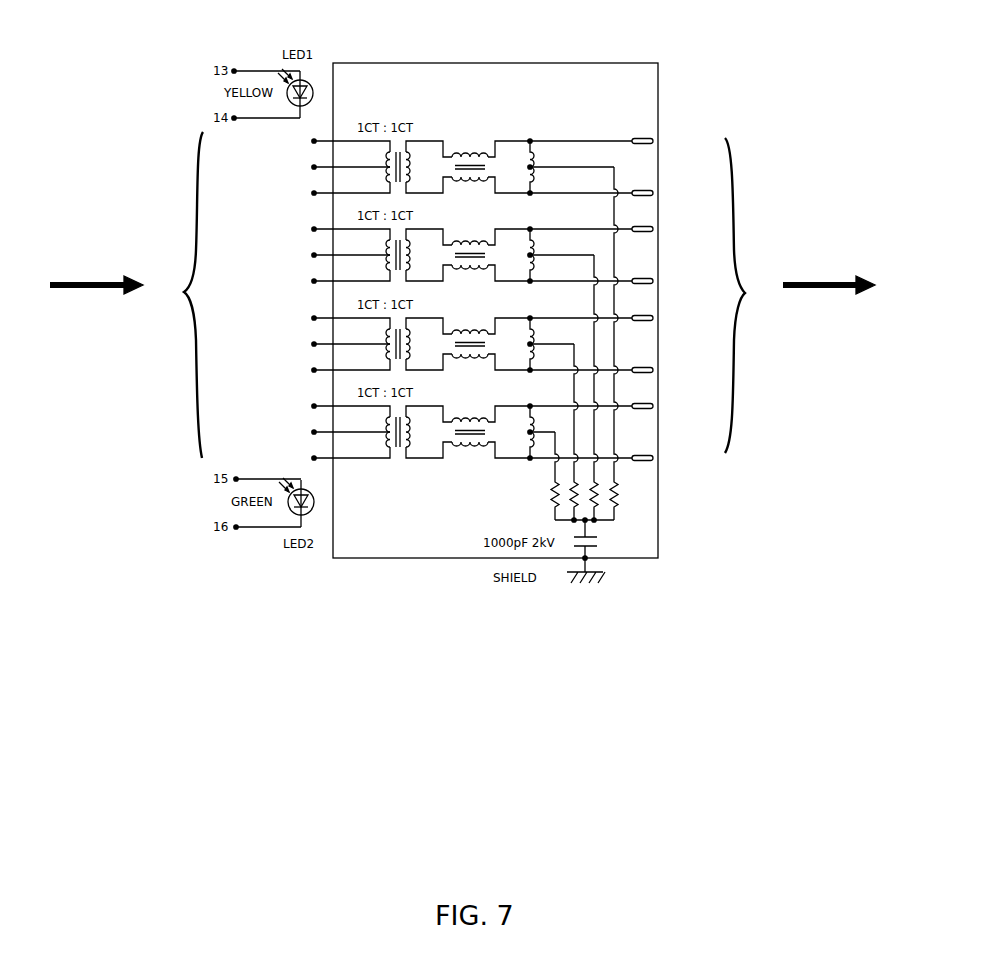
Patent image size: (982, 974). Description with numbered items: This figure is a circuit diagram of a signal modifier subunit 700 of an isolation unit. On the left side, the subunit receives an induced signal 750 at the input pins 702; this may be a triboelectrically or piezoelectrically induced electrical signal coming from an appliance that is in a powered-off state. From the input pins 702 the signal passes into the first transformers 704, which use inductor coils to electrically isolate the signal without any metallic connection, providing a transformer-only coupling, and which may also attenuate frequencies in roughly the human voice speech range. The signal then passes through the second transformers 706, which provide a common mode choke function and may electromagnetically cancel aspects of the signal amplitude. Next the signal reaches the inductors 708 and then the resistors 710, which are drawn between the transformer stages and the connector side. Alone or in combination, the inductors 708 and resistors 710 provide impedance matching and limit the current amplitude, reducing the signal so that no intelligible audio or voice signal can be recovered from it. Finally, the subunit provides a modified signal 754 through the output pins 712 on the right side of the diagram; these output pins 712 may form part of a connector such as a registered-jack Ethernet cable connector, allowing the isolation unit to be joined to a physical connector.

The signal modifier subunit 700 is at (320, 752).
The input pins 702 is at (183, 293).
The first transformers 704 is at (395, 155).
The second transformers 706 is at (458, 159).
The inductors 708 is at (530, 141).
The resistors 710 is at (615, 495).
The output pins 712 is at (746, 294).
The induced signal 750 is at (100, 266).
The modified signal 754 is at (829, 253).